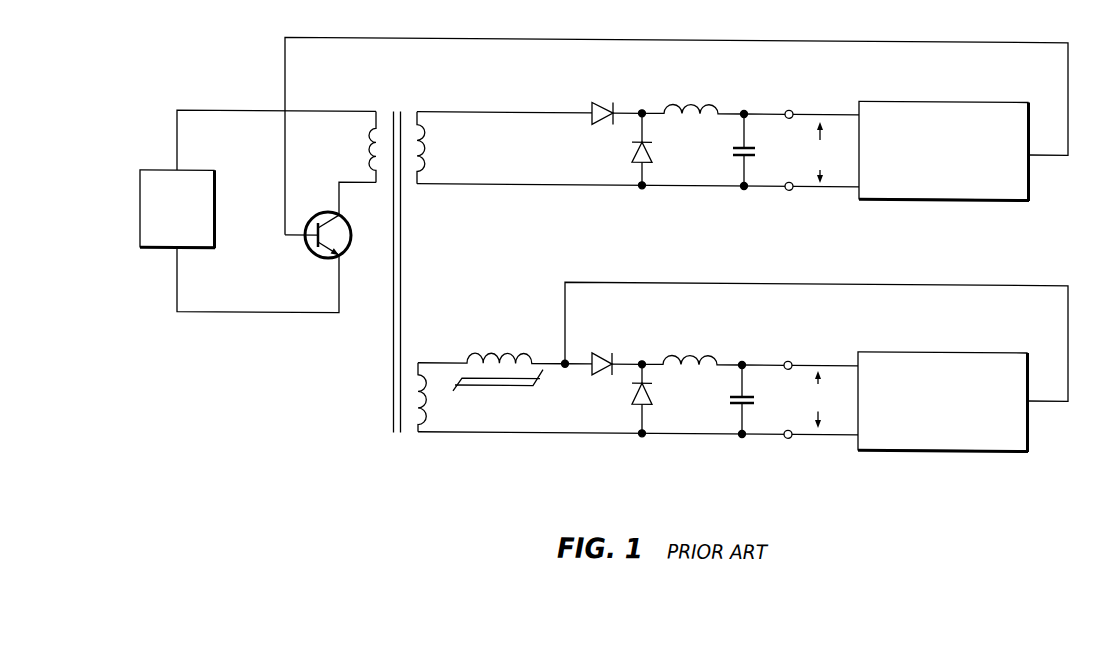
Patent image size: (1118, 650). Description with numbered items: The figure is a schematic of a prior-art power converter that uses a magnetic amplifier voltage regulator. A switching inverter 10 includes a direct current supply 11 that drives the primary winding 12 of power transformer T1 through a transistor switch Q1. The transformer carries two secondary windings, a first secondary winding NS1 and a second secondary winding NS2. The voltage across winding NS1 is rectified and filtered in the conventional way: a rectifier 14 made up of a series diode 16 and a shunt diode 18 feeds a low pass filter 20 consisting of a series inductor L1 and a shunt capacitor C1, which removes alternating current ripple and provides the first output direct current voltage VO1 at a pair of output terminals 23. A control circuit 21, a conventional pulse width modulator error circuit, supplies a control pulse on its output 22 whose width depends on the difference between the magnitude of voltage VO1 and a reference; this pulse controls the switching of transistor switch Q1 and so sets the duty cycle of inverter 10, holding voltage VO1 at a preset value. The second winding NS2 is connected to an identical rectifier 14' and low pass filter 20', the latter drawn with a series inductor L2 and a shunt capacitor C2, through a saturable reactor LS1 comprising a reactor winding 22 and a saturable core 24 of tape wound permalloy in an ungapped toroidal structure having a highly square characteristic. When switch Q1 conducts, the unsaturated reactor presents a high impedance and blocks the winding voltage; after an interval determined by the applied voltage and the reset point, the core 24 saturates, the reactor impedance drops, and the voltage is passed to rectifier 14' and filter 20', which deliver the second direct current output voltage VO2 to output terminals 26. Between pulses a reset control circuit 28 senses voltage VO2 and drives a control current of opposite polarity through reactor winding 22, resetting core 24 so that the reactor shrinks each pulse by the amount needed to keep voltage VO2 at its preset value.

The switching inverter 10 is at (174, 341).
The direct current supply 11 is at (186, 222).
The primary winding 12 is at (368, 141).
The transistor switch Q1 is at (310, 252).
The power transformer T1 is at (377, 434).
The first secondary winding NS1 is at (425, 136).
The second secondary winding NS2 is at (425, 405).
The rectifier 14 is at (602, 120).
The series diode 16 is at (592, 105).
The shunt diode 18 is at (633, 152).
The series inductor L1 is at (693, 105).
The low pass filter 20 is at (756, 85).
The shunt capacitor C1 is at (734, 157).
The output terminals 23 is at (788, 108).
The first output direct current voltage VO1 is at (818, 152).
The control circuit 21 is at (957, 105).
The output 22 is at (1070, 82).
The saturable reactor LS1 is at (519, 337).
The saturable core 24 is at (508, 385).
The rectifier 14' is at (617, 374).
The low pass filter 20' is at (715, 334).
The second filter inductor L2 is at (690, 357).
The second filter capacitor C2 is at (730, 403).
The output terminals 26 is at (786, 360).
The second output direct current voltage VO2 is at (819, 399).
The reset control circuit 28 is at (912, 350).